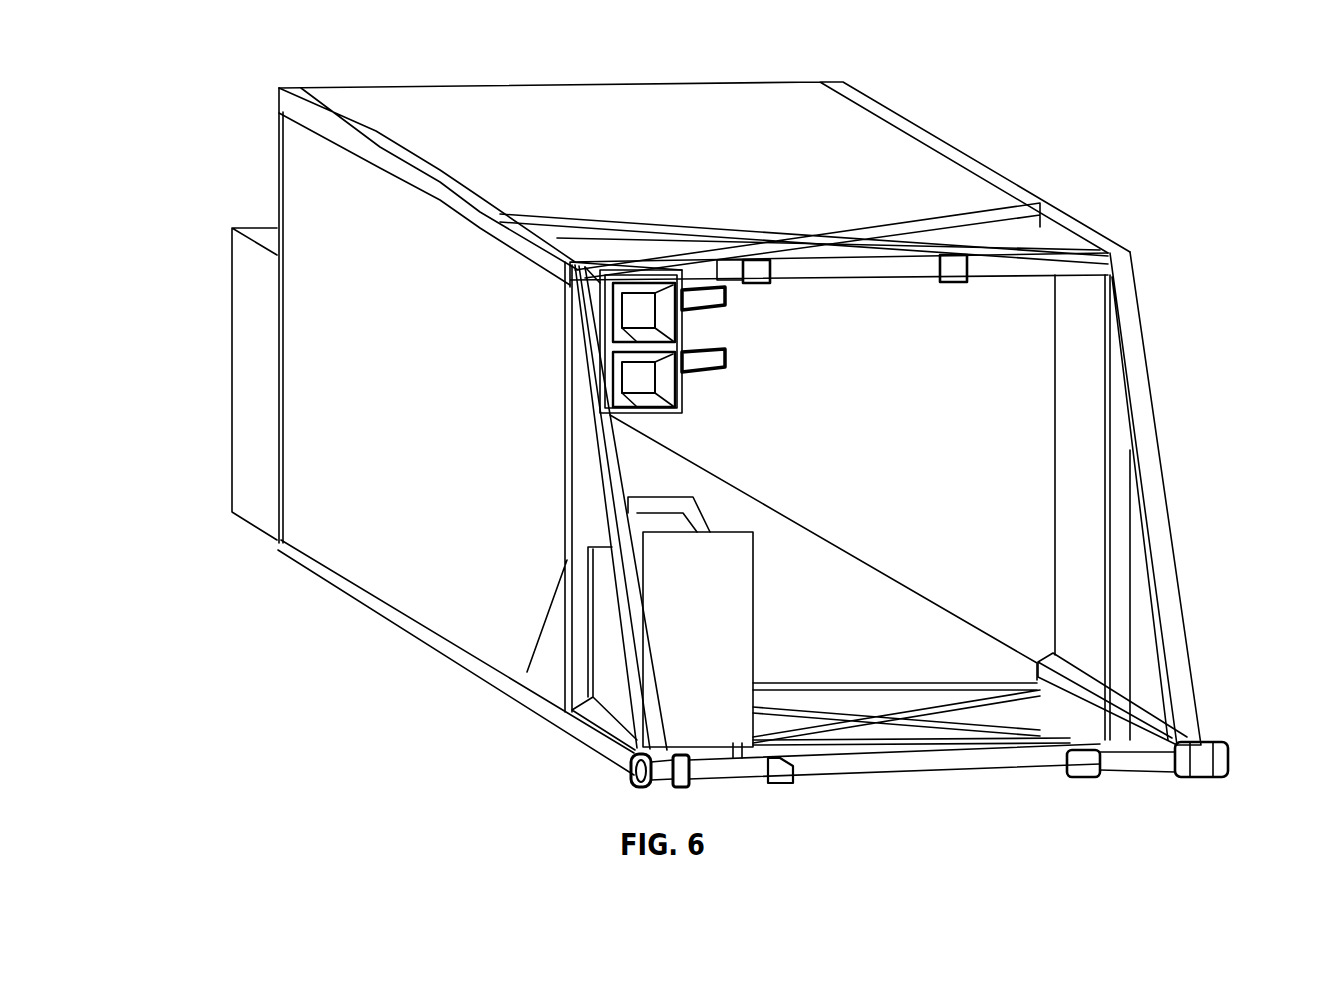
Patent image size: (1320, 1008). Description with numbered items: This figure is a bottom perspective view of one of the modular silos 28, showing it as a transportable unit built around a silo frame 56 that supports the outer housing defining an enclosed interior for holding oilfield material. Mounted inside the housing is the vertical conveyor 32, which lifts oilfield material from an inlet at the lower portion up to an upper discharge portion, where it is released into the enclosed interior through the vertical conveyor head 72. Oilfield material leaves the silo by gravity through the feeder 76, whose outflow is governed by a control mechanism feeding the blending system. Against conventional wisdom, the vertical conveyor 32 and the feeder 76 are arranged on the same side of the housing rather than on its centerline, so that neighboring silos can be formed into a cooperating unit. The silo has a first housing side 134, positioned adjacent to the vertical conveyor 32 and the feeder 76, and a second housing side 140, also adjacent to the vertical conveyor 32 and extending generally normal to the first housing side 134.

The second housing side 140 is at (898, 167).
The first housing side 134 is at (505, 612).
The modular silo 28 is at (370, 607).
The vertical conveyor head 72 is at (245, 483).
The feeder 76 is at (637, 315).
The vertical conveyor 32 is at (790, 762).
The silo frame 56 is at (1158, 517).